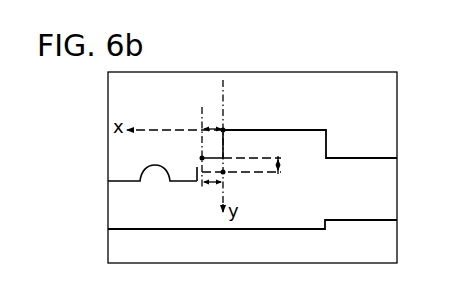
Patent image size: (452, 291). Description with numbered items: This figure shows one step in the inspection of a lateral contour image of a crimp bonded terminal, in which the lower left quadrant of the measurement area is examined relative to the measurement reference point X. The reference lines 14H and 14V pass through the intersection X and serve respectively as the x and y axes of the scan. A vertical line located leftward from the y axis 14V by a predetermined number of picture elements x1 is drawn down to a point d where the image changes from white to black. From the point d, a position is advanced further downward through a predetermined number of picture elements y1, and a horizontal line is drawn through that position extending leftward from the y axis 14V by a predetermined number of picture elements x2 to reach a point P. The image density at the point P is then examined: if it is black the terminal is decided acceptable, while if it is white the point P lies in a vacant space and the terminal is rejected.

The reference line (y axis) 14V is at (226, 85).
The reference line (x axis) 14H is at (306, 129).
The measurement reference point X is at (224, 129).
The point d is at (201, 156).
The point P is at (196, 171).
The predetermined number of picture elements x1 is at (213, 127).
The predetermined number of picture elements x2 is at (211, 184).
The predetermined number of picture elements y1 is at (281, 165).